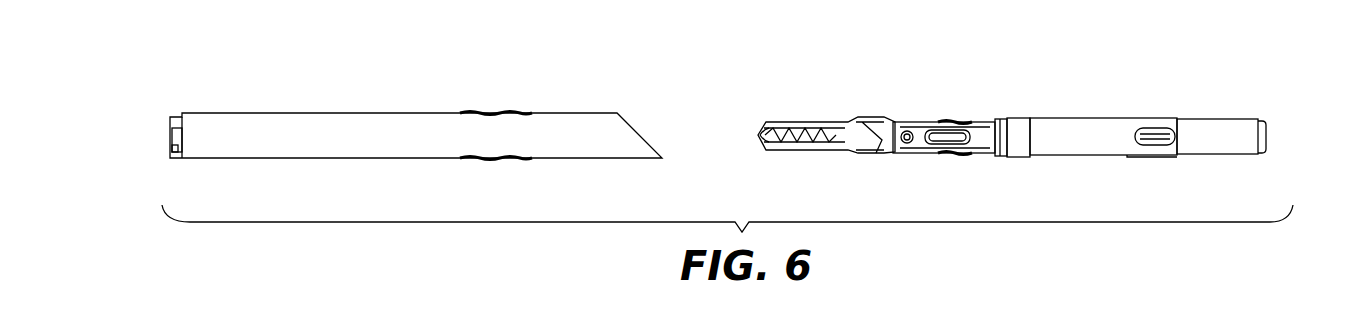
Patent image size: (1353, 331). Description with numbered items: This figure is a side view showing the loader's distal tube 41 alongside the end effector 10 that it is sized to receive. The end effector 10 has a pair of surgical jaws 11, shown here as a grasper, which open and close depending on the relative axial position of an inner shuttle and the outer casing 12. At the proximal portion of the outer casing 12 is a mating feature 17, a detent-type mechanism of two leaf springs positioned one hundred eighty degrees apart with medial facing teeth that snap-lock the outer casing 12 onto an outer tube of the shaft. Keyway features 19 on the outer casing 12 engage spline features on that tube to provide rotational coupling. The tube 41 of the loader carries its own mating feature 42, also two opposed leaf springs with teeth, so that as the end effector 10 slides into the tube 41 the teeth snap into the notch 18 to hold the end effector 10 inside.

The end effector 10 is at (960, 90).
The surgical jaws 11 is at (800, 120).
The outer casing 12 is at (1071, 156).
The mating feature 17 is at (1208, 118).
The notch 18 is at (1020, 118).
The keyway features 19 is at (1150, 128).
The distal tube 41 is at (321, 112).
The mating feature 42 is at (484, 112).